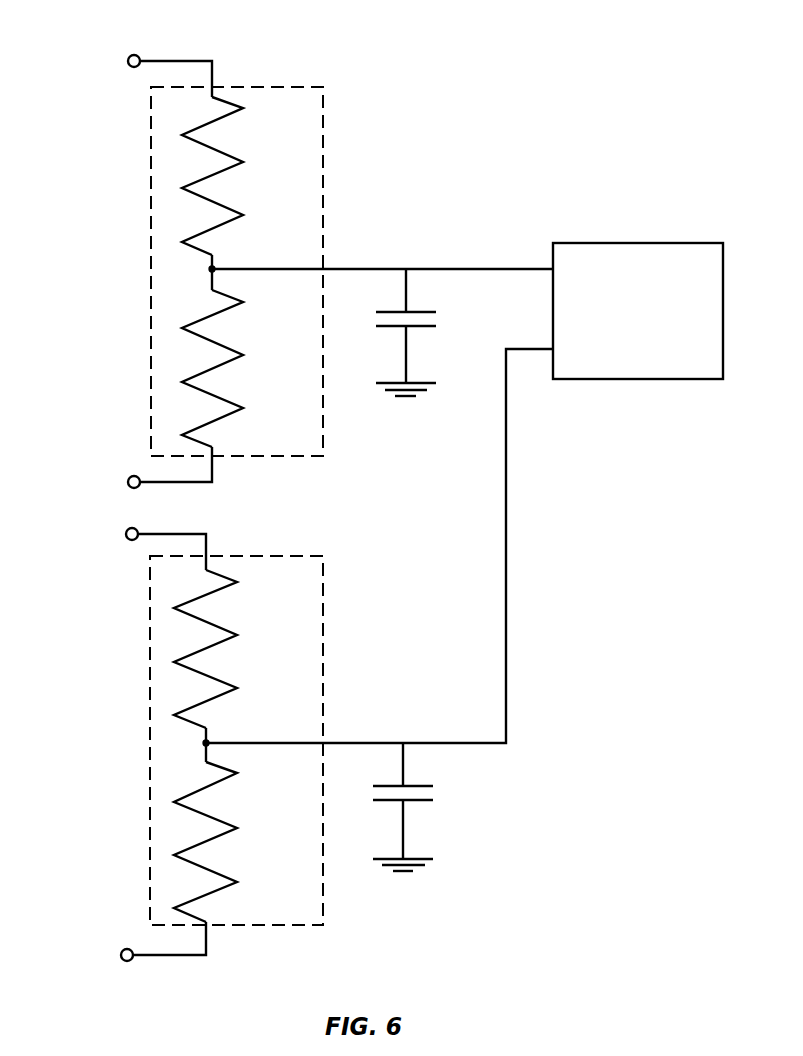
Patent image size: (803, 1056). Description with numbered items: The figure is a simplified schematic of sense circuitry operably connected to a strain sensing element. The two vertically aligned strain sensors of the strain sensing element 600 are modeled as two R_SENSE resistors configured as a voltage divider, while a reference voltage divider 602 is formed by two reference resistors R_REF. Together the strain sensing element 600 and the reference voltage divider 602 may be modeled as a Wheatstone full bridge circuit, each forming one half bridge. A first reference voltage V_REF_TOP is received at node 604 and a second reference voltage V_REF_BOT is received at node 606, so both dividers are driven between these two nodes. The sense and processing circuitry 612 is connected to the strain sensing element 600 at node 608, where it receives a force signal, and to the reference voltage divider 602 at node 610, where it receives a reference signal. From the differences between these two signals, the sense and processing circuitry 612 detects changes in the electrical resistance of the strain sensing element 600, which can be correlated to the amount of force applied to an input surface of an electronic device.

The strain sensing element 600 is at (151, 283).
The reference voltage divider 602 is at (150, 748).
The node 604 is at (134, 55).
The node 606 is at (132, 476).
The node 608 is at (247, 257).
The node 610 is at (230, 731).
The sense and processing circuitry 612 is at (647, 243).